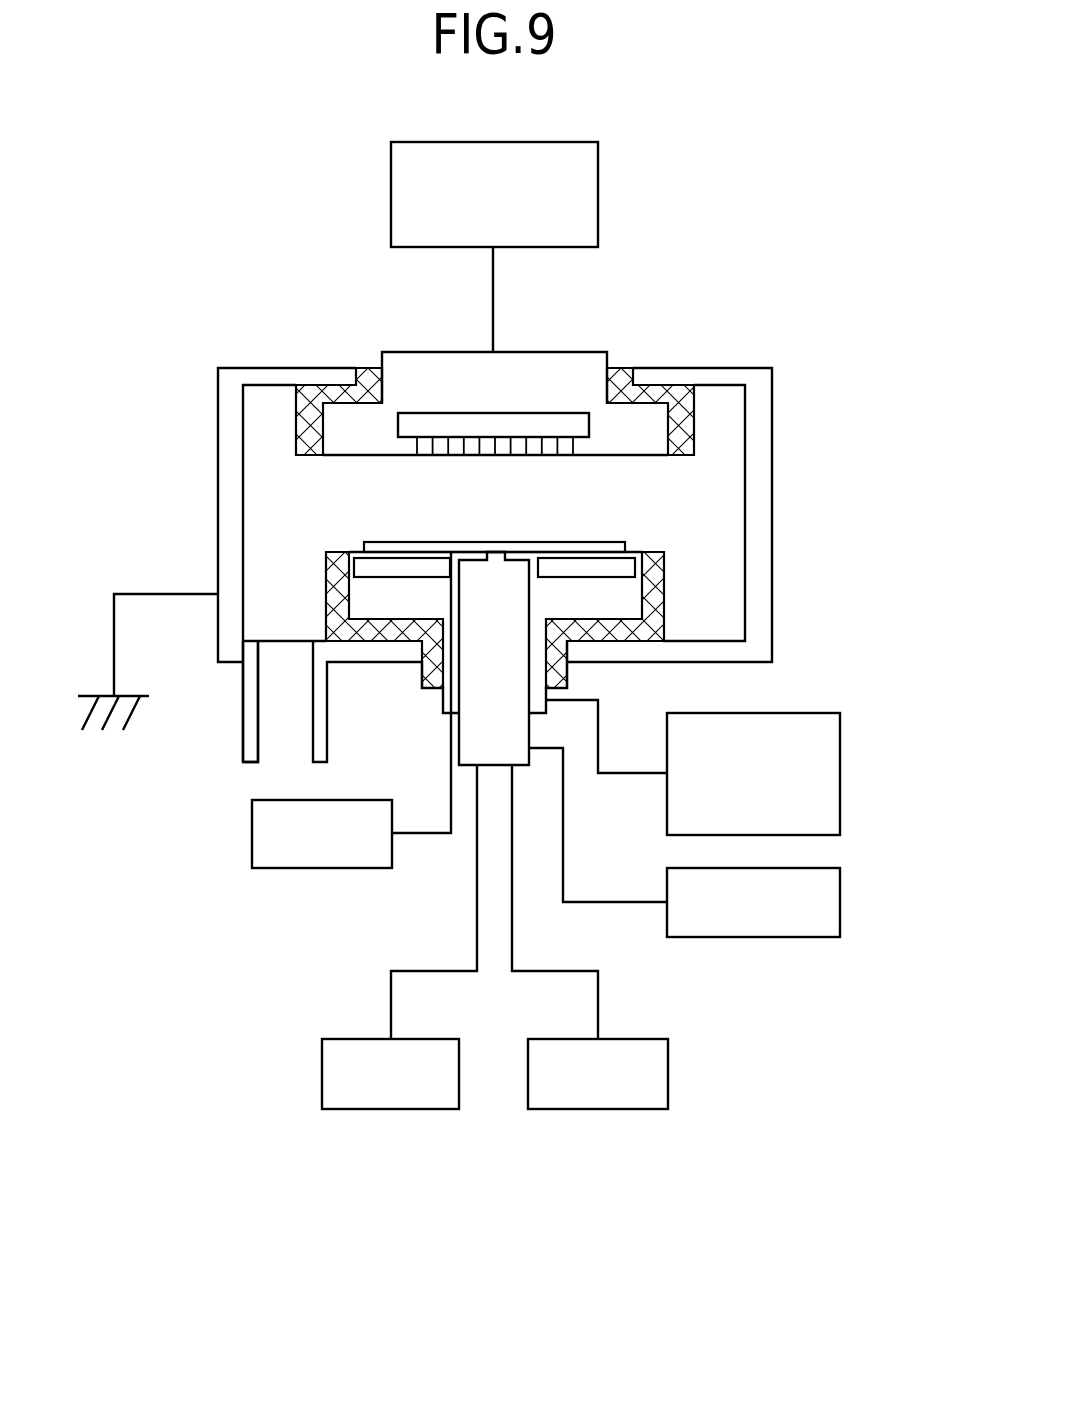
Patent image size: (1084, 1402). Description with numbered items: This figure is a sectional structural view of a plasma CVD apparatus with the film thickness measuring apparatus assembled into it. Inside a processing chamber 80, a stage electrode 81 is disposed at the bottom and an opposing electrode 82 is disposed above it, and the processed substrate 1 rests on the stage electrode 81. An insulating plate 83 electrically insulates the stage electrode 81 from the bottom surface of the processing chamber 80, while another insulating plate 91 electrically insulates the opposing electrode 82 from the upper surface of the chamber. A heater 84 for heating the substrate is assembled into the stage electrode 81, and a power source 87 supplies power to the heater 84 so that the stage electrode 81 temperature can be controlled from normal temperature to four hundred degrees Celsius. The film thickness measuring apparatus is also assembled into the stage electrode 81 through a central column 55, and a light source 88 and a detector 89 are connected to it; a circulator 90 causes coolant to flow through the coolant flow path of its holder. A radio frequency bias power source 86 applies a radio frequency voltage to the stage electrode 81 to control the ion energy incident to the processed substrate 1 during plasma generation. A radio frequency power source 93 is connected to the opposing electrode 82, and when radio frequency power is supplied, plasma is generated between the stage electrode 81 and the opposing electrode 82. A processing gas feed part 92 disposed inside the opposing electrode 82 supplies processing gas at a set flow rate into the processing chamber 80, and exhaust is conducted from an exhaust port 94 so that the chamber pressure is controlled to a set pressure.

The processed substrate 1 is at (495, 545).
The support column 55 is at (459, 750).
The processing chamber 80 is at (773, 383).
The stage electrode 81 is at (618, 607).
The opposing electrode 82 is at (650, 437).
The insulating plate 83 is at (663, 578).
The heater 84 is at (390, 572).
The radio frequency bias power source 86 is at (841, 773).
The power source 87 is at (252, 833).
The light source 88 is at (391, 1109).
The detector 89 is at (598, 1109).
The circulator 90 is at (841, 902).
The insulating plate 91 is at (620, 370).
The processing gas feed part 92 is at (438, 423).
The radio frequency power source 93 is at (391, 192).
The exhaust port 94 is at (278, 729).